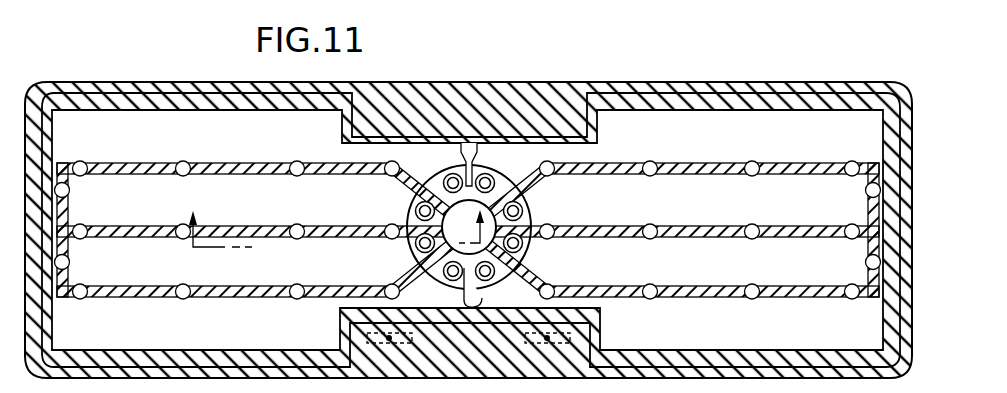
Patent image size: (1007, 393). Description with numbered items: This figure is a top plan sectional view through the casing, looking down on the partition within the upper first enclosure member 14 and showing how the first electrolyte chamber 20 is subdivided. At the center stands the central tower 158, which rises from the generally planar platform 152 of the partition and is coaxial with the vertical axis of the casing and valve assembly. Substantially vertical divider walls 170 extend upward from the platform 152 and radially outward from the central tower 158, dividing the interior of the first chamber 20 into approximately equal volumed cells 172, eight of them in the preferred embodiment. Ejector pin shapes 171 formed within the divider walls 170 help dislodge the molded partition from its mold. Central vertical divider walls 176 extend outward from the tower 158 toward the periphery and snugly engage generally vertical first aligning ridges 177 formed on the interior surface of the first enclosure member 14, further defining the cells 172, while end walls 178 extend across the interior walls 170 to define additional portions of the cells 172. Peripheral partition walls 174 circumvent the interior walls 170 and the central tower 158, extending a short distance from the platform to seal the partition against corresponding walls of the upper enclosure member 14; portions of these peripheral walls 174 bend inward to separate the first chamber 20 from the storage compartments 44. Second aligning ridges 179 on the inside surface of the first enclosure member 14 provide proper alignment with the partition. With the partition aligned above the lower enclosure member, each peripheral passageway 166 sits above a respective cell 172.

The first enclosure member 14 is at (332, 219).
The first electrolyte chamber 20 is at (652, 141).
The storage compartments 44 is at (470, 119).
The planar platform 152 is at (100, 185).
The central tower 158 is at (470, 181).
The peripheral passageway 166 is at (437, 172).
The vertical divider walls 170 is at (140, 163).
The ejector pin shapes 171 is at (660, 165).
The cells 172 is at (184, 182).
The peripheral partition walls 174 is at (640, 83).
The central vertical divider walls 176 is at (473, 316).
The first aligning ridges 177 is at (450, 312).
The end walls 178 is at (70, 287).
The second aligning ridges 179 is at (72, 229).